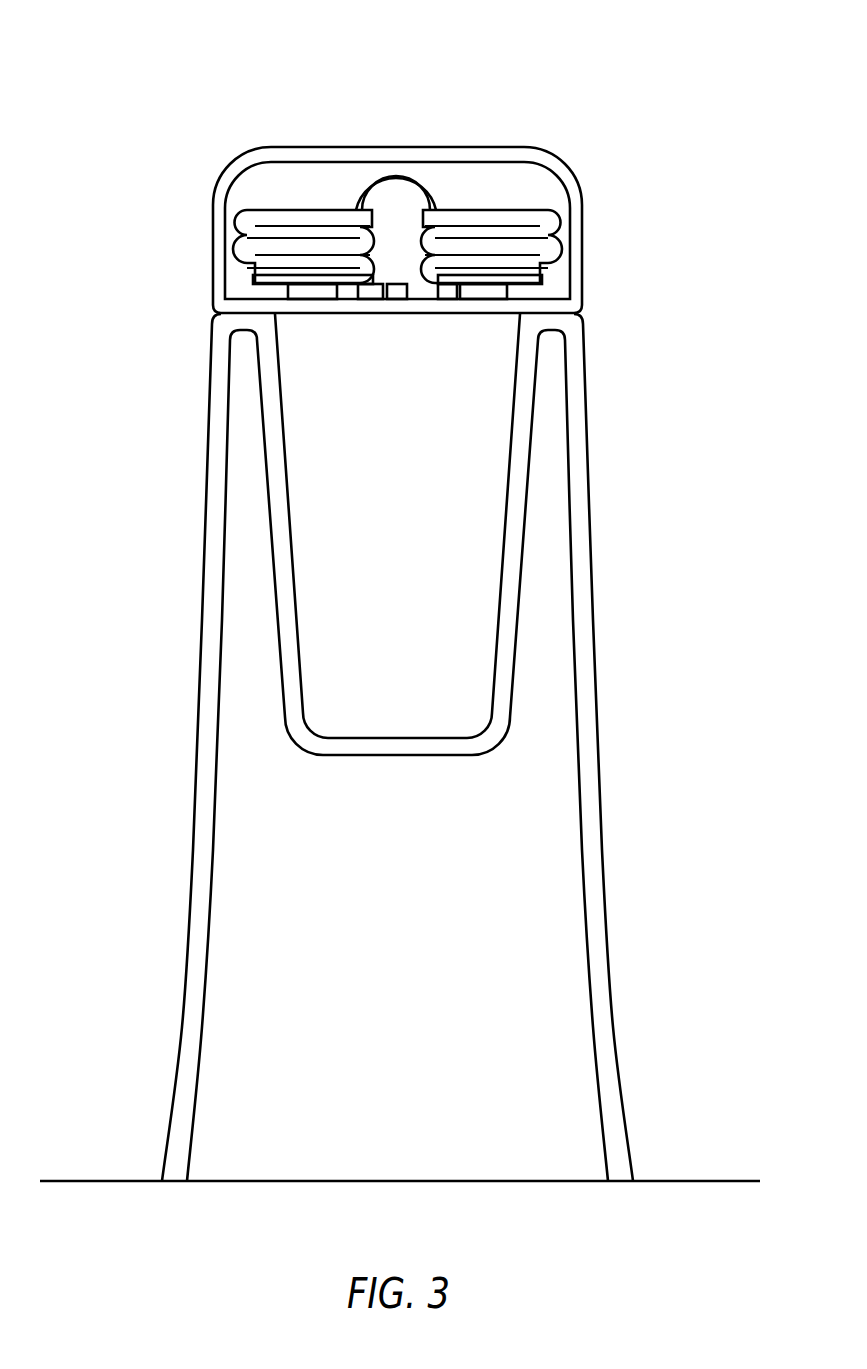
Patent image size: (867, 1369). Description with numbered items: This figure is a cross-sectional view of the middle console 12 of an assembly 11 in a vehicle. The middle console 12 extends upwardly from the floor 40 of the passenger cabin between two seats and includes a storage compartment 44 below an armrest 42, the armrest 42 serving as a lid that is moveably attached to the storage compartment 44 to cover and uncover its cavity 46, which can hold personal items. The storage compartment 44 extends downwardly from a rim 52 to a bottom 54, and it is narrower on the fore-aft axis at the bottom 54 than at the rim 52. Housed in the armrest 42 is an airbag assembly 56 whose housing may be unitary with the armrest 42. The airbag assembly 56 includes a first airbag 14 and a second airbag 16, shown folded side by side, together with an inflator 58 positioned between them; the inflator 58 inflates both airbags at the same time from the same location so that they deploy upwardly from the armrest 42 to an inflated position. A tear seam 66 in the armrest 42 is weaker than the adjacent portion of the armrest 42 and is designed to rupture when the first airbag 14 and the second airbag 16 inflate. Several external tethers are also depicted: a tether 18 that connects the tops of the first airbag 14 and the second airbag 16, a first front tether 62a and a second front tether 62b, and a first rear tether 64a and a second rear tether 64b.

The assembly 11 is at (400, 596).
The middle console 12 is at (430, 625).
The first airbag 14 is at (528, 210).
The second airbag 16 is at (268, 210).
The tether 18 is at (432, 186).
The floor 40 is at (695, 1181).
The armrest 42 is at (410, 183).
The storage compartment 44 is at (530, 515).
The cavity 46 is at (356, 586).
The rim 52 is at (578, 326).
The bottom 54 is at (403, 738).
The airbag assembly 56 is at (503, 182).
The inflator 58 is at (393, 270).
The first front tether 62a is at (508, 290).
The second front tether 62b is at (288, 290).
The first rear tether 64a is at (425, 300).
The second rear tether 64b is at (372, 300).
The tear seam 66 is at (398, 155).